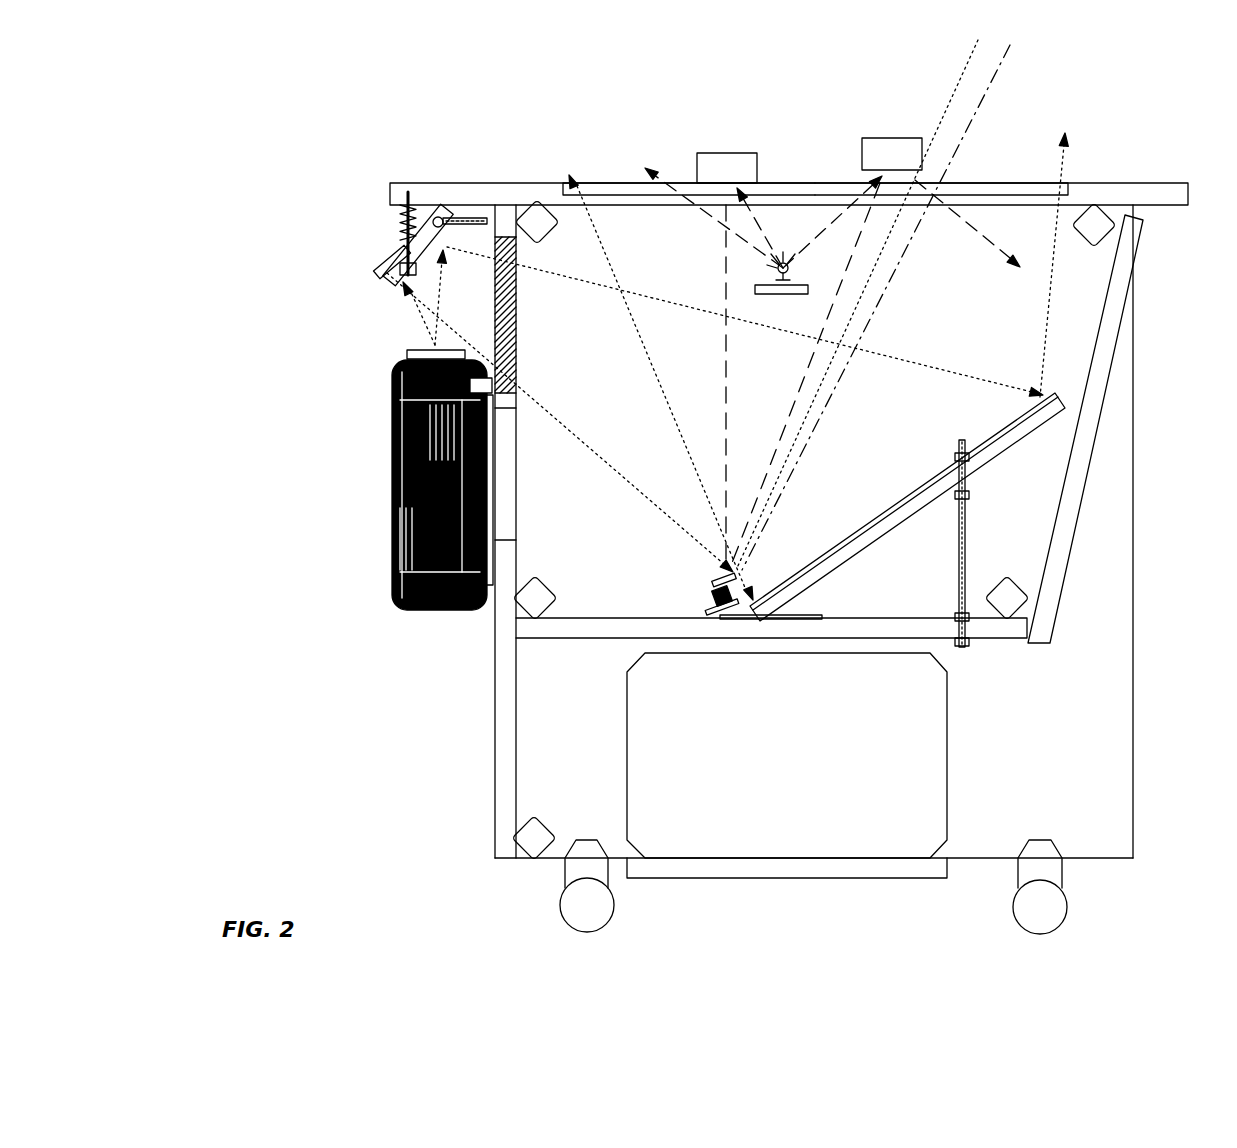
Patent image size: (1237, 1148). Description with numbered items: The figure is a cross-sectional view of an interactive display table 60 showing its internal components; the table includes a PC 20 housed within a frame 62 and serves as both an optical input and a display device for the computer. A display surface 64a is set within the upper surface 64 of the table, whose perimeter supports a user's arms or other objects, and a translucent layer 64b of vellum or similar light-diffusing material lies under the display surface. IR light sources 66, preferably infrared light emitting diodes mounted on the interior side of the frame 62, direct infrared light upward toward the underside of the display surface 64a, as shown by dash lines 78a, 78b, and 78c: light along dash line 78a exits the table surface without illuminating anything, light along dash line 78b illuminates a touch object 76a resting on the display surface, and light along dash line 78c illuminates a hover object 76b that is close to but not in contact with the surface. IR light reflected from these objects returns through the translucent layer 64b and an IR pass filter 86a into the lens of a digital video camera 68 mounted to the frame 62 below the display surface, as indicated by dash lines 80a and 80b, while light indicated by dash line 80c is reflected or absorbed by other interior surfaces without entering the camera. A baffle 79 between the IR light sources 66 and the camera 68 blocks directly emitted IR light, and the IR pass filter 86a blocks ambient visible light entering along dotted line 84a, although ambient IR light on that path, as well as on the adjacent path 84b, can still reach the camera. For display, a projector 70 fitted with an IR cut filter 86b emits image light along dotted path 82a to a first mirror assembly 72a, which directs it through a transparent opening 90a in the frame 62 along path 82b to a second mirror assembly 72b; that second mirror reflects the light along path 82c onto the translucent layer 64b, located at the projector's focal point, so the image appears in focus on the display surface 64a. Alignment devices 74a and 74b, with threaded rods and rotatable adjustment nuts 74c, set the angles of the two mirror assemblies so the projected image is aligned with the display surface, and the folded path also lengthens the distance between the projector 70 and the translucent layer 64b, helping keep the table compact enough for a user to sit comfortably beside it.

The PC 20 is at (948, 755).
The interactive display table 60 is at (380, 684).
The frame 62 is at (494, 754).
The upper surface 64 is at (527, 183).
The display surface 64a is at (618, 183).
The translucent layer 64b is at (983, 193).
The IR light sources 66 is at (769, 272).
The digital video camera 68 is at (715, 592).
The projector 70 is at (390, 456).
The first mirror assembly 72a is at (378, 274).
The second mirror assembly 72b is at (880, 515).
The alignment device 74a is at (473, 218).
The alignment device 74b is at (963, 520).
The rotatable adjustment nuts 74c is at (400, 274).
The touch object 76a is at (713, 152).
The hover object 76b is at (878, 138).
The dash line 78a is at (700, 211).
The dash line 78b is at (762, 215).
The dash line 78c is at (845, 212).
The baffle 79 is at (780, 295).
The dash line 80a is at (722, 345).
The dash line 80b is at (803, 393).
The dash line 80c is at (980, 233).
The dotted path 82a is at (418, 315).
The sight line between mirrors 82b is at (640, 492).
The sight line through window 82c is at (632, 318).
The dotted line 84a is at (965, 80).
The second return path 84b is at (996, 80).
The IR pass filter 86a is at (713, 577).
The IR cut filter 86b is at (408, 356).
The transparent opening 90a is at (517, 359).